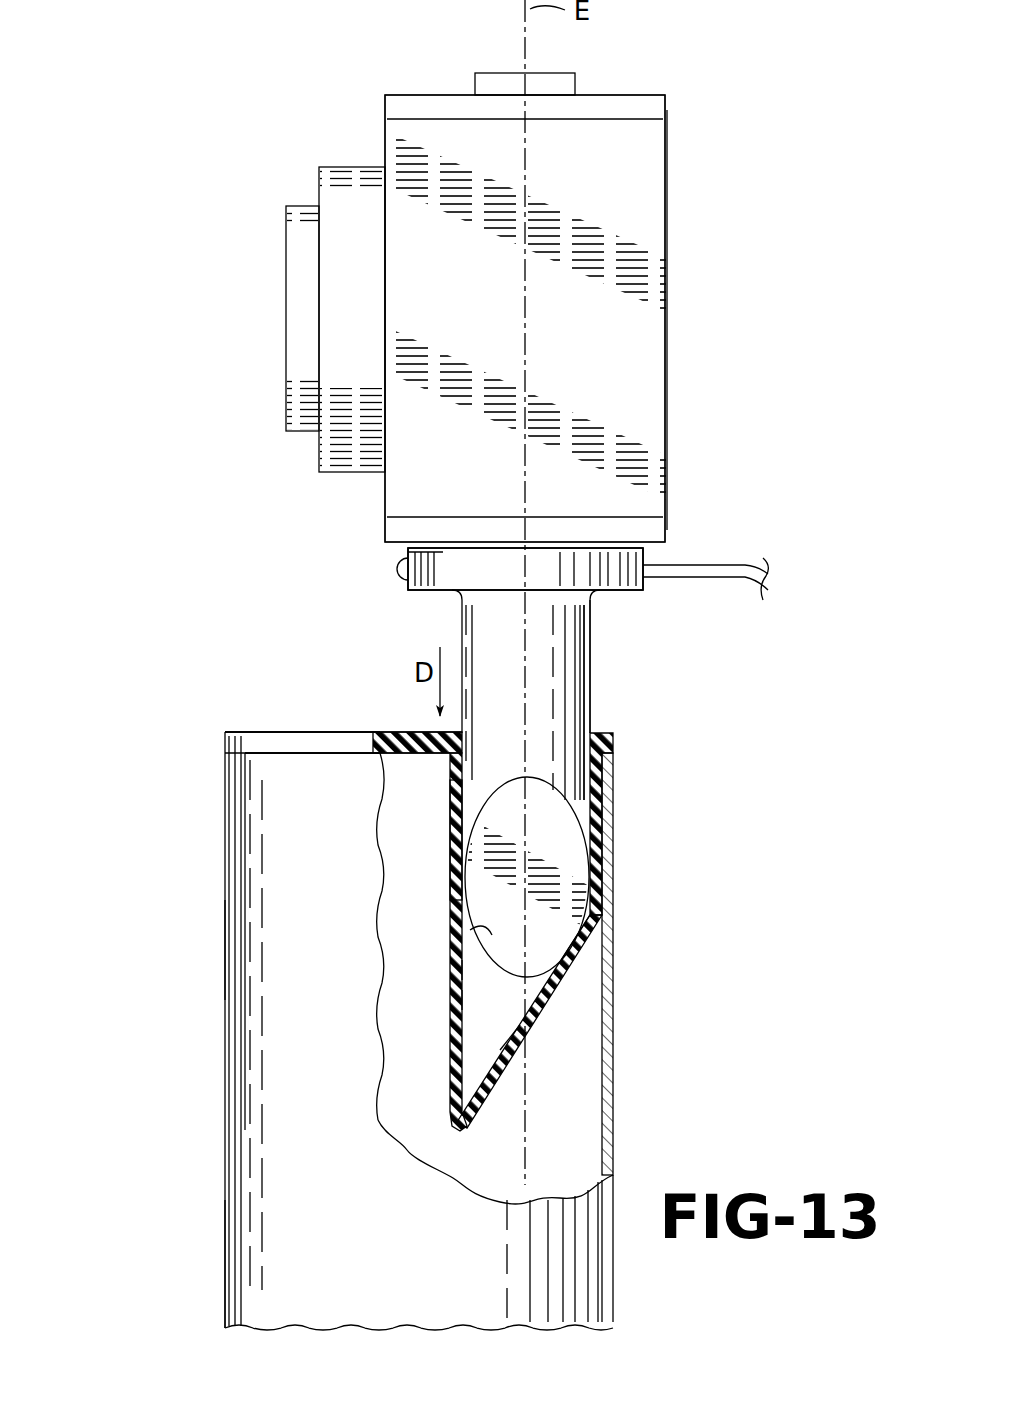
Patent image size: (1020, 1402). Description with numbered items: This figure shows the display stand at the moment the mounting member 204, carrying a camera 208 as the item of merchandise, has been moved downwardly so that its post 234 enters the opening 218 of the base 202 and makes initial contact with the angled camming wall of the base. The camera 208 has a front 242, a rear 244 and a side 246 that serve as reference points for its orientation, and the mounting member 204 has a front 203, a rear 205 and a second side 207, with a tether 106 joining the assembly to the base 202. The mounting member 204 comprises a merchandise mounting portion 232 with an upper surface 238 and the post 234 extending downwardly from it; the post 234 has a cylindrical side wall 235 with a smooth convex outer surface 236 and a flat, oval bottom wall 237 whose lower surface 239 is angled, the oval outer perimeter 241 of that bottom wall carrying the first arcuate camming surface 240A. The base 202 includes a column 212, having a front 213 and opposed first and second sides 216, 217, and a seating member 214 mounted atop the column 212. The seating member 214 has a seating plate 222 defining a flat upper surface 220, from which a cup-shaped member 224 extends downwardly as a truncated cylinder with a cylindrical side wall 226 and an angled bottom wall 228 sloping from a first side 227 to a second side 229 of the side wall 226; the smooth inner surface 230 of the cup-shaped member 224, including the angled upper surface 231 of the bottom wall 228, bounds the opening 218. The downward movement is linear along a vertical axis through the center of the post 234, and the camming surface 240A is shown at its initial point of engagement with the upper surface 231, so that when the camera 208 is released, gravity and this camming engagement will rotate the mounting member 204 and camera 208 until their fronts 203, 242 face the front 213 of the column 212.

The tether 106 is at (742, 565).
The base 202 is at (216, 1258).
The front of mounting member 203 is at (408, 552).
The mounting member 204 is at (442, 596).
The rear of mounting member 205 is at (643, 556).
The second side of mounting member 207 is at (521, 568).
The camera 208 is at (385, 127).
The column 212 is at (223, 848).
The front of column 213 is at (415, 1207).
The seating member 214 is at (225, 738).
The first side of column 216 is at (225, 940).
The second side of column 217 is at (613, 1022).
The opening 218 is at (497, 985).
The upper surface 220 is at (287, 731).
The seating plate 222 is at (256, 732).
The cup-shaped member 224 is at (450, 808).
The side wall 226 is at (450, 868).
The first side of side wall 227 is at (605, 905).
The angled bottom wall 228 is at (551, 1016).
The second side of side wall 229 is at (450, 1105).
The inner surface 230 is at (490, 930).
The upper surface of bottom wall 231 is at (515, 1043).
The merchandise mounting portion 232 is at (403, 586).
The post 234 is at (593, 685).
The side wall of post 235 is at (584, 718).
The outer surface of post 236 is at (540, 660).
The bottom wall of post 237 is at (560, 850).
The upper surface of merchandise mounting portion 238 is at (456, 541).
The lower surface of bottom wall 239 is at (540, 820).
The first arcuate camming surface 240A is at (582, 950).
The oval-shaped outer perimeter 241 is at (478, 968).
The front of camera 242 is at (286, 316).
The rear of camera 244 is at (668, 333).
The first side of camera 246 is at (590, 385).